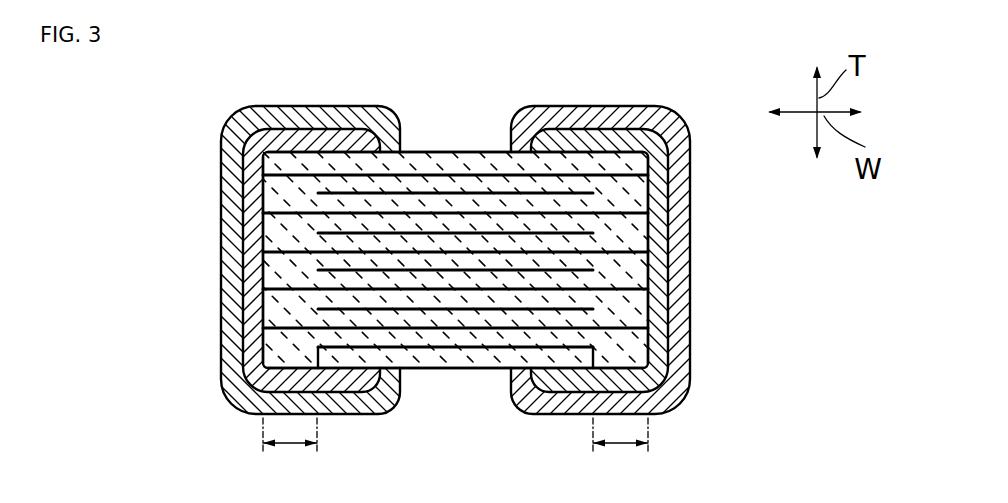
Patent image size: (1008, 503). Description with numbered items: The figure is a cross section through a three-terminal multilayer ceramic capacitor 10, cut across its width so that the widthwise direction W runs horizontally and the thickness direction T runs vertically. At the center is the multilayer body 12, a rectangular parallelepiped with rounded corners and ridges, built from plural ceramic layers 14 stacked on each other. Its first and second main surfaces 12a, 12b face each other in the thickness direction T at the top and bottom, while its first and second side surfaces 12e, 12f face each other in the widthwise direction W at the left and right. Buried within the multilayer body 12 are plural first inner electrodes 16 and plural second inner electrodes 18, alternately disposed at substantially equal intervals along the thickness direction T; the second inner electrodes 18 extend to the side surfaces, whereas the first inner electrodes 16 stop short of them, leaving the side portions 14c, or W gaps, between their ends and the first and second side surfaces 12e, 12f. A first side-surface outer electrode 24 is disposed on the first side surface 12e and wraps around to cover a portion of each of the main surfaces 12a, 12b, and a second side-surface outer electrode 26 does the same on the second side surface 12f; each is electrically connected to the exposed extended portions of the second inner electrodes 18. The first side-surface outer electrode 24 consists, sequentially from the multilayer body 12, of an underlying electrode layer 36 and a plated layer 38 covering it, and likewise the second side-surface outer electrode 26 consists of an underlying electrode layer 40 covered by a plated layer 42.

The multilayer ceramic capacitor 10 is at (176, 77).
The multilayer body 12 is at (452, 257).
The first main surface 12a is at (494, 151).
The second main surface 12b is at (450, 370).
The first side surface 12e is at (263, 289).
The second side surface 12f is at (647, 300).
The ceramic layers 14 is at (460, 205).
The side portions 14c is at (455, 454).
The first inner electrodes 16 is at (422, 347).
The second inner electrodes 18 is at (513, 328).
The first side-surface outer electrode 24 is at (348, 260).
The second side-surface outer electrode 26 is at (606, 260).
The underlying electrode layer 36 is at (253, 268).
The plated layer 38 is at (233, 235).
The underlying electrode layer 40 is at (658, 266).
The plated layer 42 is at (680, 220).